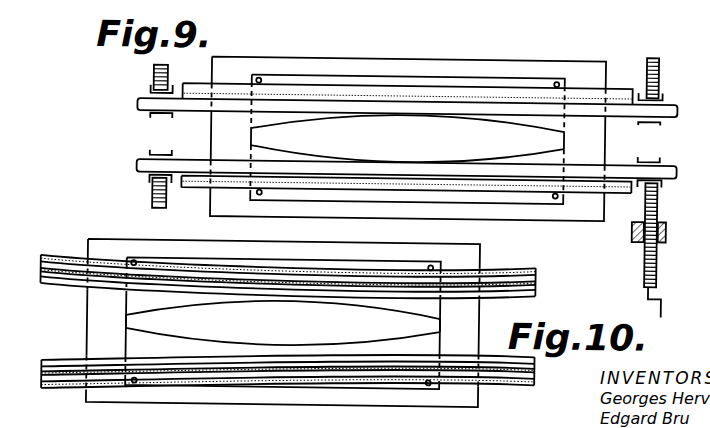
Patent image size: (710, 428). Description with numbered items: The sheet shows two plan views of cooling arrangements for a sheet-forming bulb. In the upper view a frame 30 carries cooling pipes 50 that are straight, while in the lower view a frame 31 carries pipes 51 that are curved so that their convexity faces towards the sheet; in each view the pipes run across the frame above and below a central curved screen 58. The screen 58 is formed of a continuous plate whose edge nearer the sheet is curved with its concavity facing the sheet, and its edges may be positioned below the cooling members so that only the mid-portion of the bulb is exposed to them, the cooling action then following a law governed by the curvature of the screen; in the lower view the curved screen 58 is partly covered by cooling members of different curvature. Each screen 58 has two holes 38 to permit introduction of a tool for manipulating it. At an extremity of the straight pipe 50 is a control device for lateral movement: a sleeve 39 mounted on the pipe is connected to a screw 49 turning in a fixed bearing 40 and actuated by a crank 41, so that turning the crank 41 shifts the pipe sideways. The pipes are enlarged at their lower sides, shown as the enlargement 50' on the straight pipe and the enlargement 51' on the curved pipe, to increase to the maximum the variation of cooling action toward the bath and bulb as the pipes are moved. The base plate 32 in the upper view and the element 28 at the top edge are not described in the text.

In FIG. 9, the support 28 is at (268, 0).
In FIG. 9, the frame 30 is at (223, 140).
In FIG. 10, the frame 31 is at (95, 310).
In FIG. 9, the base plate 32 is at (517, 0).
In FIG. 9, the hole 38 is at (262, 80).
In FIG. 10, the hole 38 is at (132, 262).
In FIG. 9, the sleeve 39 is at (648, 156).
In FIG. 9, the fixed bearing 40 is at (636, 236).
In FIG. 9, the crank 41 is at (661, 297).
In FIG. 9, the screw 49 is at (150, 87).
In FIG. 9, the cooling pipe 50 is at (423, 145).
In FIG. 9, the enlarged lower side of pipe 50' is at (408, 63).
In FIG. 10, the cooling pipe 51 is at (271, 324).
In FIG. 10, the enlarged lower side of pipe 51' is at (287, 315).
In FIG. 9, the curved screen 58 is at (407, 80).
In FIG. 10, the curved screen 58 is at (198, 262).